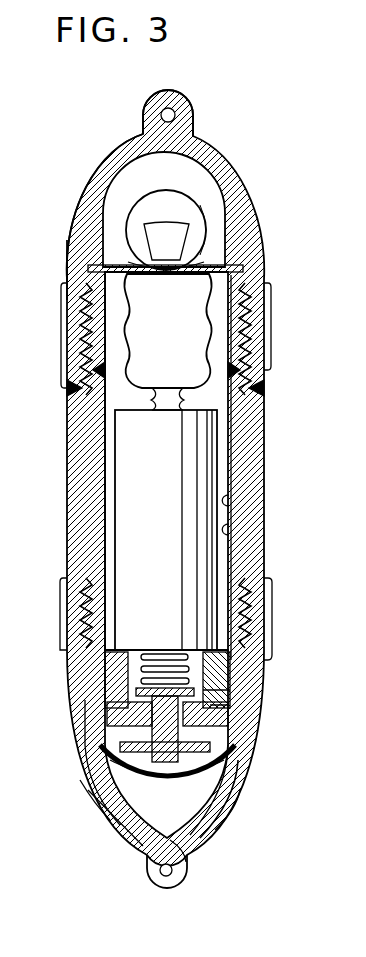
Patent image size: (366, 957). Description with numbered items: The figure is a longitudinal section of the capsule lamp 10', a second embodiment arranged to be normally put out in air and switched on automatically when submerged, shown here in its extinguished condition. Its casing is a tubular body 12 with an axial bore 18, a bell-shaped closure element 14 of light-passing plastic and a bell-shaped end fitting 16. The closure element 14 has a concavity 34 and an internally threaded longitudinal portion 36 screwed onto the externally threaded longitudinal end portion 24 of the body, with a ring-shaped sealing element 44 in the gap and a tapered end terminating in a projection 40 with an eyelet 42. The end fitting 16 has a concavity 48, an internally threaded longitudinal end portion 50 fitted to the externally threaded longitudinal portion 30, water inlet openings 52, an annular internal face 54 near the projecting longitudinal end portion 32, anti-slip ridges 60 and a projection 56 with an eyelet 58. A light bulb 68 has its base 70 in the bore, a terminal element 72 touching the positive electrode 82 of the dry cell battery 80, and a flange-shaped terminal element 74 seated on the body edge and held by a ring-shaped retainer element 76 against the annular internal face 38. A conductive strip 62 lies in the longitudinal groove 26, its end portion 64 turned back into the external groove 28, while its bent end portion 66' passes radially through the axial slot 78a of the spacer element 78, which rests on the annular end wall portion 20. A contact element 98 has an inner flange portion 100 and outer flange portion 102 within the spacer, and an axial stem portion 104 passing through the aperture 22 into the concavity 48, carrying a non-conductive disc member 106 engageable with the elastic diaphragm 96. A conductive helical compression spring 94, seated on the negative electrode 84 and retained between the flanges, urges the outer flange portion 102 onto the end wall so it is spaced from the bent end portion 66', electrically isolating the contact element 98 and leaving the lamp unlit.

The capsule lamp 10' is at (199, 478).
The tubular body 12 is at (68, 500).
The closure element 14 is at (115, 152).
The end fitting 16 is at (76, 712).
The axial bore 18 is at (117, 393).
The annular end wall portion 20 is at (105, 738).
The aperture 22 is at (163, 762).
The externally threaded longitudinal end portion 24 is at (82, 322).
The longitudinal groove 26 is at (232, 502).
The external groove 28 is at (262, 320).
The externally threaded longitudinal portion 30 is at (87, 594).
The projecting longitudinal end portion 32 is at (100, 755).
The concavity 34 is at (104, 192).
The internally threaded longitudinal portion 36 is at (87, 348).
The annular internal face 38 is at (74, 240).
The projection 40 is at (150, 108).
The eyelet 42 is at (173, 111).
The ring-shaped sealing element 44 is at (92, 382).
The concavity 48 is at (143, 838).
The internally threaded longitudinal end portion 50 is at (88, 604).
The water inlet openings 52 is at (108, 803).
The annular internal face 54 is at (95, 775).
The projection 56 is at (152, 872).
The eyelet 58 is at (165, 884).
The spaced parallel ridges 60 is at (66, 647).
The electrically conductive strip 62 is at (232, 530).
The end portion 64 is at (252, 294).
The bent end portion 66' is at (256, 707).
The light bulb 68 is at (193, 188).
The base 70 is at (205, 342).
The terminal element 72 is at (203, 388).
The flange-shaped terminal element 74 is at (210, 262).
The ring-shaped retainer element 76 is at (255, 252).
The spacer element 78 is at (220, 672).
The axial slot 78a is at (237, 723).
The dry cell battery 80 is at (137, 540).
The positive electrode 82 is at (185, 404).
The negative electrode 84 is at (246, 662).
The helical compression spring 94 is at (147, 660).
The elastic diaphragm 96 is at (185, 858).
The contact element 98 is at (200, 826).
The inner flange portion 100 is at (227, 750).
The outer flange portion 102 is at (212, 768).
The axial stem portion 104 is at (220, 790).
The disc member 106 is at (220, 813).